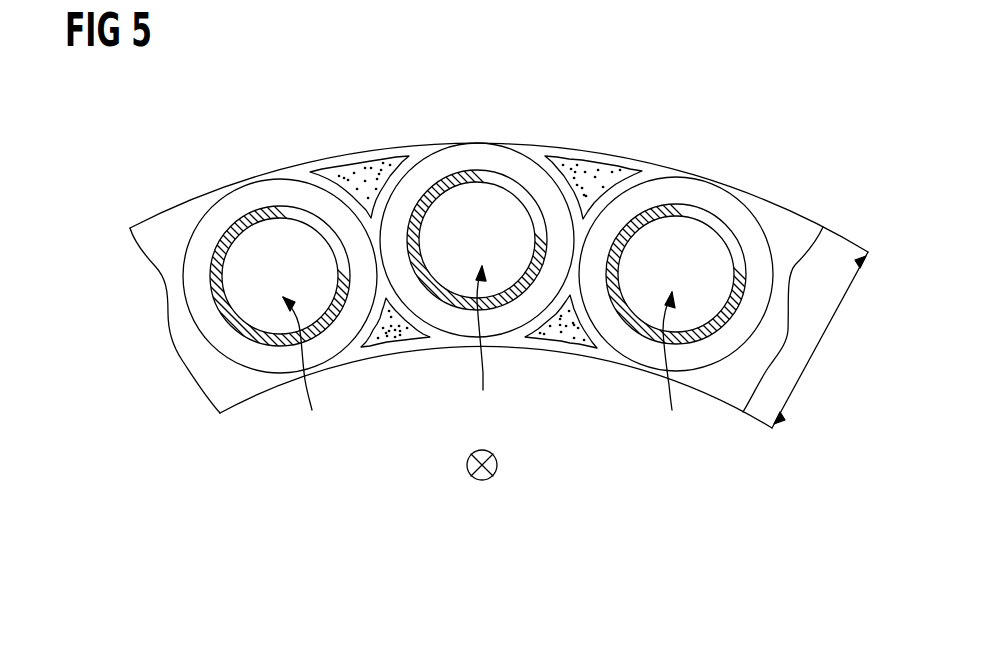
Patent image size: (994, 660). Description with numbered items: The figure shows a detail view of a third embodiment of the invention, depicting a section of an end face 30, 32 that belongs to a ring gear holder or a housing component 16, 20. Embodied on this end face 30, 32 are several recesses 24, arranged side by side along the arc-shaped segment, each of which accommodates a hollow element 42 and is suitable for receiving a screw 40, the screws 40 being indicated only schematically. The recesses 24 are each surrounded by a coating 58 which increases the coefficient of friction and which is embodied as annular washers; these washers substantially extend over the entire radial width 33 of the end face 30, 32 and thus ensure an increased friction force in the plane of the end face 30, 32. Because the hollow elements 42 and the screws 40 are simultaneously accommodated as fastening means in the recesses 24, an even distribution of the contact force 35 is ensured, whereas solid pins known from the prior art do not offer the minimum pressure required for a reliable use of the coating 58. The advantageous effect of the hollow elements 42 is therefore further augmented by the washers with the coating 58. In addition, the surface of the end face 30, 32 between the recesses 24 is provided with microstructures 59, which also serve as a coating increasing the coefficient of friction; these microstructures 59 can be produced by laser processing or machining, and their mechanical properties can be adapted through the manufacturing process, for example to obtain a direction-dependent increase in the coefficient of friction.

The stator segment 16 is at (418, 328).
The housing component 20 is at (177, 328).
The recess 24 is at (247, 210).
The end face 30 is at (495, 259).
The end face 32 is at (166, 239).
The radial width 33 is at (815, 347).
The contact force 35 is at (497, 462).
The screw 40 is at (483, 360).
The hollow element 42 is at (267, 207).
The coating which increases the coefficient of friction 58 is at (295, 203).
The microstructures 59 is at (365, 172).